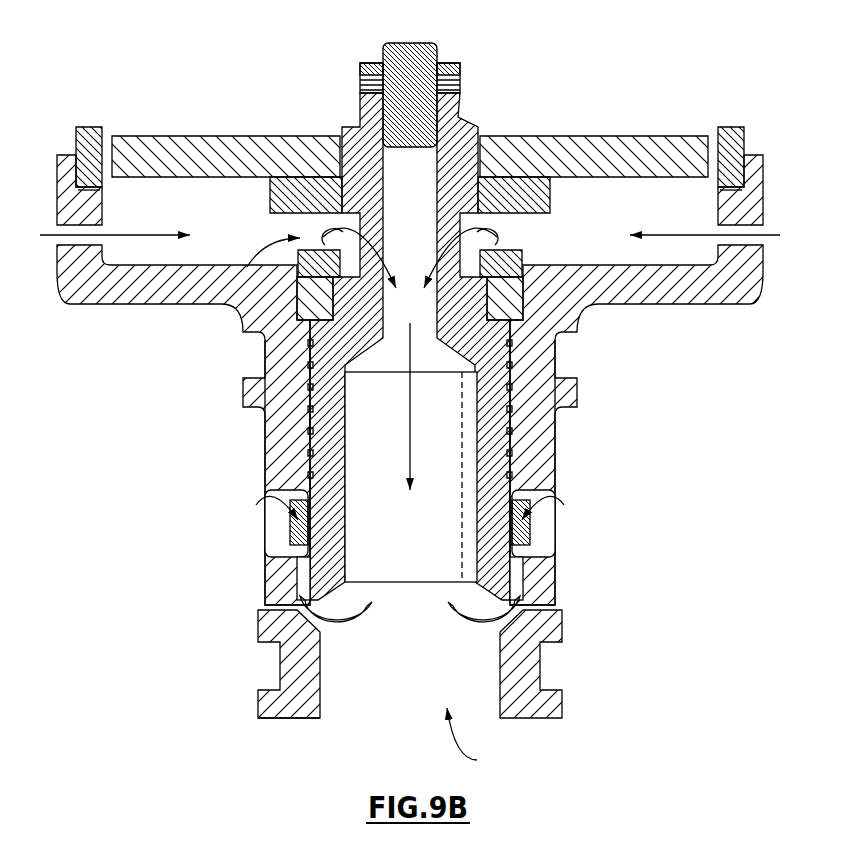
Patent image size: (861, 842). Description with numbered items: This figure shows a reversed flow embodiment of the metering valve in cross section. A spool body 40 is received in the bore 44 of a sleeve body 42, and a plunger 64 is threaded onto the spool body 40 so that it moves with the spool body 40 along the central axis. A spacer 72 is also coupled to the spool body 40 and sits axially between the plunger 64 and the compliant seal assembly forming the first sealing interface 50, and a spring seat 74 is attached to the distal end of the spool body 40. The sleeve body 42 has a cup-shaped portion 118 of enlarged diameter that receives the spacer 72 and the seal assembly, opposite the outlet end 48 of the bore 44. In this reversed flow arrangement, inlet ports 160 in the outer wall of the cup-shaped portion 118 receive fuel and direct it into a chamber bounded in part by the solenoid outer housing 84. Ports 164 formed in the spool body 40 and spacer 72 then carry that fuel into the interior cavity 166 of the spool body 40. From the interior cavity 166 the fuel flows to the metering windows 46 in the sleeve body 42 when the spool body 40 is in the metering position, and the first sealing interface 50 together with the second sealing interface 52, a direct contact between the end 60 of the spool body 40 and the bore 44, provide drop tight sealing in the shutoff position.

The spool body 40 is at (474, 130).
The sleeve body 42 is at (280, 631).
The bore 44 is at (476, 741).
The metering window 46 is at (278, 537).
The outlet end 48 is at (320, 720).
The first sealing interface 50 is at (552, 312).
The second sealing interface 52 is at (533, 613).
The end of the spool body 60 is at (340, 583).
The plunger 64 is at (187, 143).
The spacer 72 is at (287, 197).
The spring seat 74 is at (400, 47).
The outer housing 84 is at (92, 127).
The cup-shaped portion 118 is at (760, 195).
The inlet port 160 is at (77, 253).
The port 164 is at (228, 320).
The interior cavity 166 is at (363, 425).